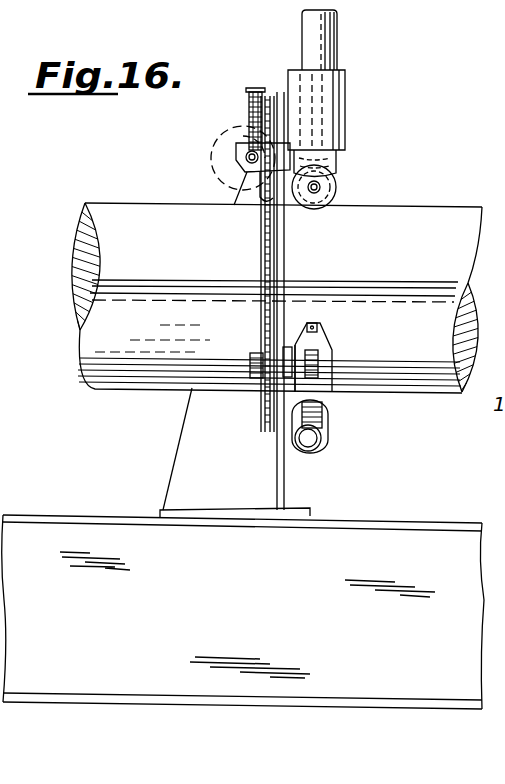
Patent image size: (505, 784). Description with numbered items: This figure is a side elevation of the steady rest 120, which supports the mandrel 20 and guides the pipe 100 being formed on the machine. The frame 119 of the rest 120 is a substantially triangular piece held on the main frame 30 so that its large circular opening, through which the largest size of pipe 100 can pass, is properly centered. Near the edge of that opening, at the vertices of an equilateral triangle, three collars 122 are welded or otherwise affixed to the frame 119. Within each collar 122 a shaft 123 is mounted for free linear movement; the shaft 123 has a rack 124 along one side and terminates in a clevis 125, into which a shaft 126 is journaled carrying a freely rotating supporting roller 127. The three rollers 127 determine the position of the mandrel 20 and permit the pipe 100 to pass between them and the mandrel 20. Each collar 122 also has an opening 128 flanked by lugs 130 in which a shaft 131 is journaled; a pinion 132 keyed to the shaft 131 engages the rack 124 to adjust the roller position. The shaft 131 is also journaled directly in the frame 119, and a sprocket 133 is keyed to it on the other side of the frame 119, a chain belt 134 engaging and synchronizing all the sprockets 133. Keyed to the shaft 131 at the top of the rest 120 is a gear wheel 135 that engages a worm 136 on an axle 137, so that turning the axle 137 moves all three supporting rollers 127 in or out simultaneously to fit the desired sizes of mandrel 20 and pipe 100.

The mandrel 20 is at (85, 253).
The main frame 30 is at (317, 616).
The pipe 100 is at (125, 386).
The frame 119 is at (285, 488).
The rest 120 is at (311, 66).
The collar 122 is at (346, 92).
The shaft 123 is at (338, 42).
The rack 124 is at (326, 420).
The clevis 125 is at (330, 160).
The shaft 126 is at (320, 185).
The supporting roller 127 is at (337, 188).
The opening 128 is at (303, 372).
The lug 130 is at (283, 348).
The shaft 131 is at (297, 134).
The pinion 132 is at (319, 355).
The sprocket 133 is at (276, 88).
The chain belt 134 is at (262, 258).
The gear wheel 135 is at (251, 100).
The worm 136 is at (211, 146).
The axle 137 is at (246, 158).